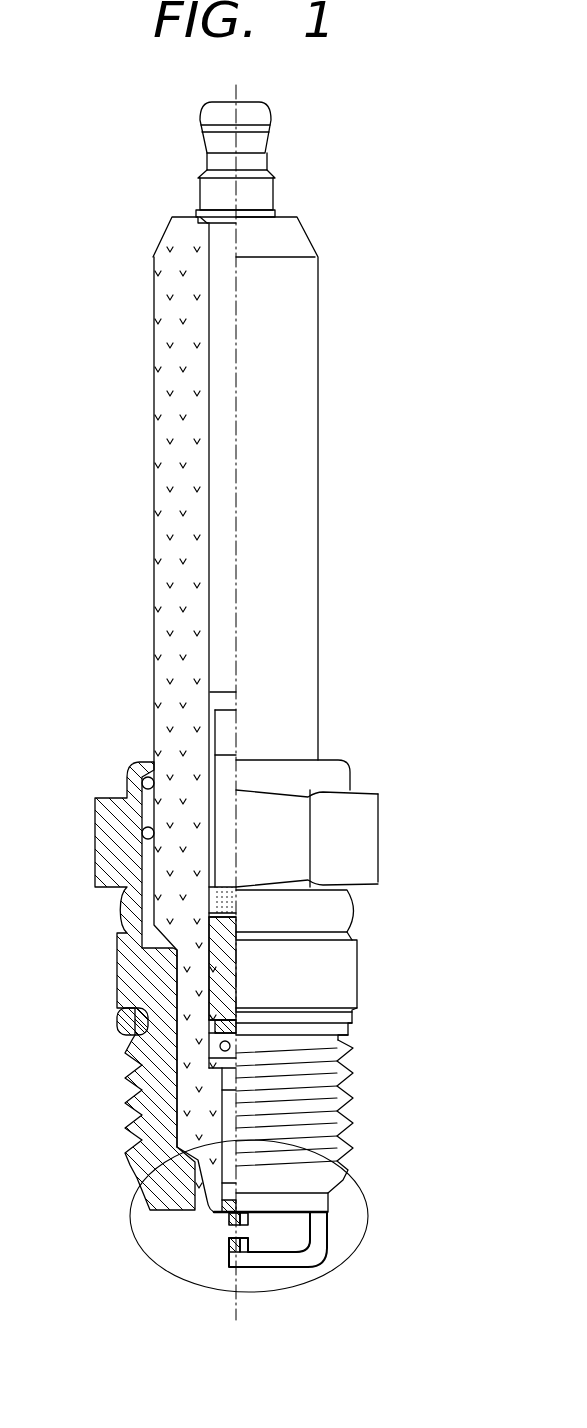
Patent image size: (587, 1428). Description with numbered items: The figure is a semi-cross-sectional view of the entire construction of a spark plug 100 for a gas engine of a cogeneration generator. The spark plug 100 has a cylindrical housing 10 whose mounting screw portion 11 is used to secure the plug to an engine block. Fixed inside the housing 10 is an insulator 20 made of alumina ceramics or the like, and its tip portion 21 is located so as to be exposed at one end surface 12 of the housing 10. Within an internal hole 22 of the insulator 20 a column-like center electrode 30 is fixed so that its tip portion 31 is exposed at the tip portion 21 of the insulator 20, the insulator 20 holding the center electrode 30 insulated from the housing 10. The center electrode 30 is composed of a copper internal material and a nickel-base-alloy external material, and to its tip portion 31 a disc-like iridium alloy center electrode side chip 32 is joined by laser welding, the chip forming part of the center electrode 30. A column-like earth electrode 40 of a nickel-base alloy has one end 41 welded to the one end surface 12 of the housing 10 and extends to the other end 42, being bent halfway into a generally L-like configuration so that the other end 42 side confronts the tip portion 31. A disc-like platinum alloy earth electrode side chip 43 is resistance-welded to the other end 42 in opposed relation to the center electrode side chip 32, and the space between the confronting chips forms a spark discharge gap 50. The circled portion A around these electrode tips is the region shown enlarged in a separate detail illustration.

The spark plug 100 is at (344, 491).
The housing 10 is at (88, 841).
The mounting screw portion 11 is at (353, 1098).
The one end surface 12 is at (172, 1214).
The insulator 20 is at (150, 659).
The tip portion 21 is at (222, 1224).
The internal hole 22 is at (223, 1102).
The center electrode 30 is at (218, 1127).
The tip portion 31 is at (229, 1220).
The center electrode side chip 32 is at (241, 1227).
The earth electrode 40 is at (342, 1243).
The one end 41 is at (317, 1218).
The other end 42 is at (232, 1256).
The earth electrode side chip 43 is at (247, 1250).
The spark discharge gap 50 is at (254, 1233).
The circled portion A is at (368, 1197).